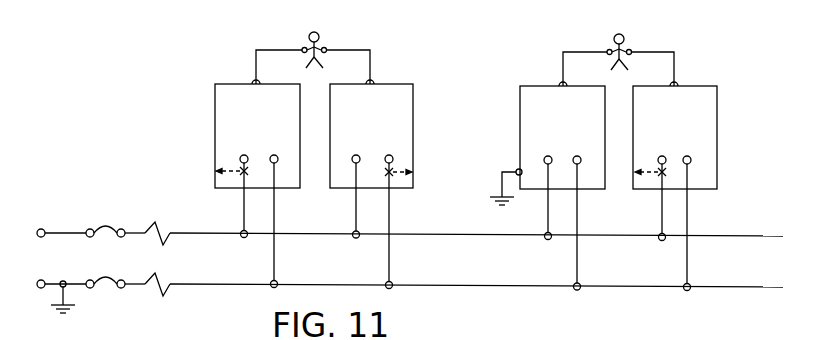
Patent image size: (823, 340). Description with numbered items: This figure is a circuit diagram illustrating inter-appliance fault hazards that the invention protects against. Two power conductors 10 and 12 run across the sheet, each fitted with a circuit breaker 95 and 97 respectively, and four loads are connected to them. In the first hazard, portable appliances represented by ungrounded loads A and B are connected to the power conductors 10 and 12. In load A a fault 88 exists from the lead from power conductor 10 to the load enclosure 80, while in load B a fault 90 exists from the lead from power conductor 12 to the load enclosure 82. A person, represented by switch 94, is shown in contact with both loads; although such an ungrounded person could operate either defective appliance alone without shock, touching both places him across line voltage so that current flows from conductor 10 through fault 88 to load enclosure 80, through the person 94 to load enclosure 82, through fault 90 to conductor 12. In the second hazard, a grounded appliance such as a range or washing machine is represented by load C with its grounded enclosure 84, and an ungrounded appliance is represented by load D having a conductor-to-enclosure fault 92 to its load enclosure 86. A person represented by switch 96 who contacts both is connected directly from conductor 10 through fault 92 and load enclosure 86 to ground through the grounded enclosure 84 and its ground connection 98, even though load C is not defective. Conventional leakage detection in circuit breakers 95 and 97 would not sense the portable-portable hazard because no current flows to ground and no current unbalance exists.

The power conductor 10 is at (428, 233).
The power conductor 12 is at (428, 284).
The load enclosure 80 is at (215, 107).
The load enclosure 82 is at (415, 105).
The grounded enclosure 84 is at (520, 107).
The load enclosure 86 is at (694, 188).
The fault 88 is at (225, 164).
The fault 90 is at (404, 166).
The conductor-to-enclosure fault 92 is at (640, 170).
The switch 94 is at (325, 40).
The circuit breaker 95 is at (138, 226).
The operator 96 is at (628, 43).
The circuit breaker 97 is at (134, 293).
The ground connection 98 is at (500, 183).